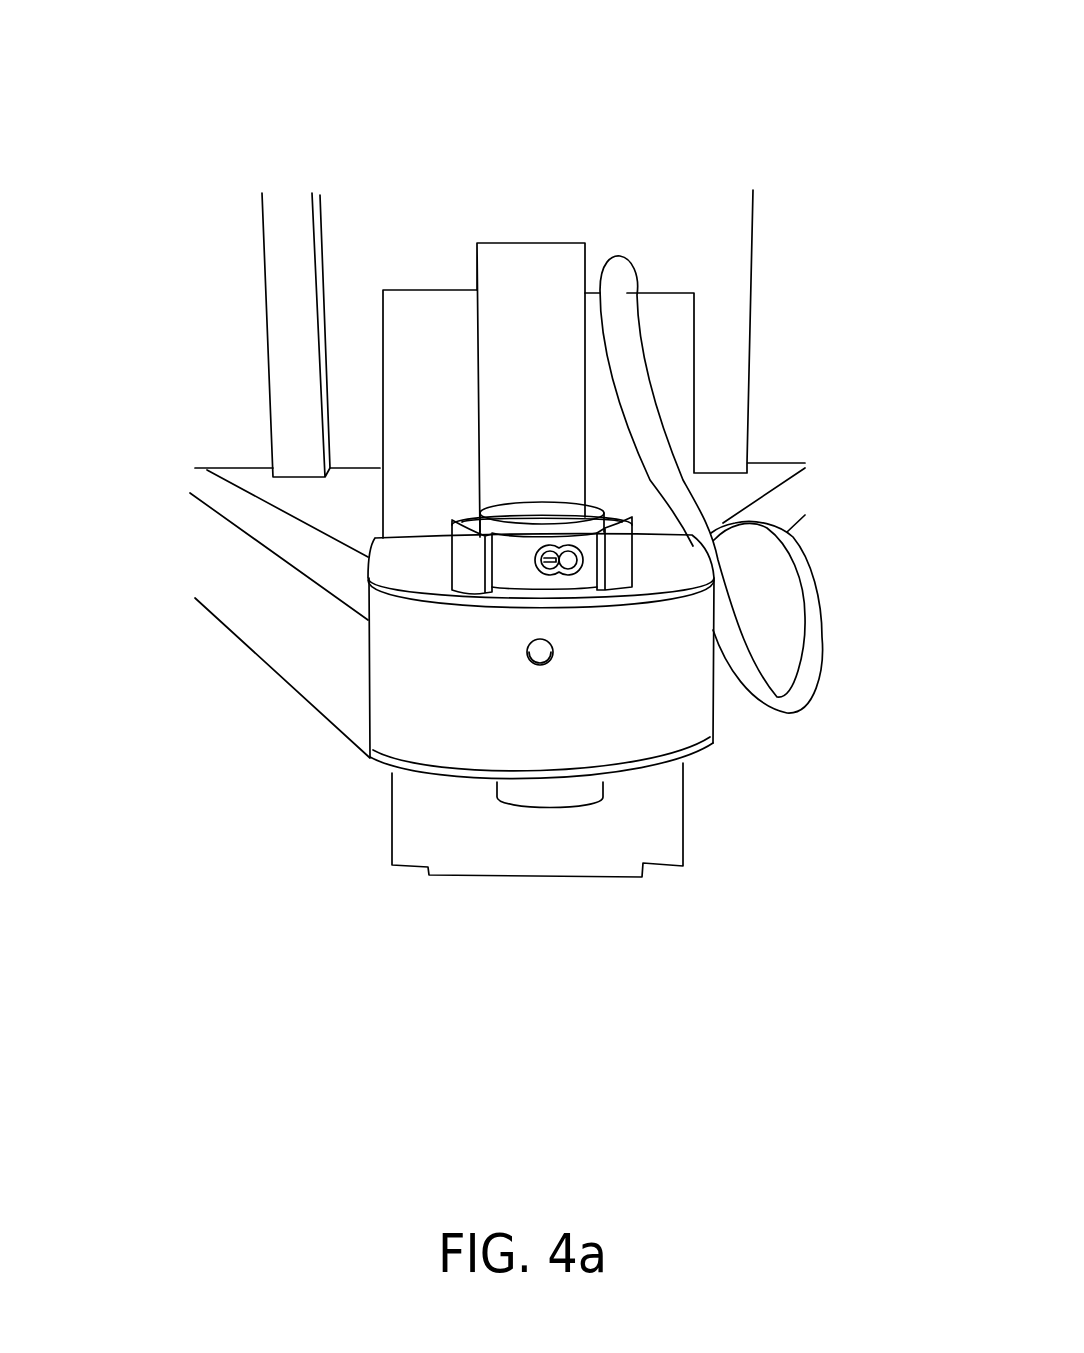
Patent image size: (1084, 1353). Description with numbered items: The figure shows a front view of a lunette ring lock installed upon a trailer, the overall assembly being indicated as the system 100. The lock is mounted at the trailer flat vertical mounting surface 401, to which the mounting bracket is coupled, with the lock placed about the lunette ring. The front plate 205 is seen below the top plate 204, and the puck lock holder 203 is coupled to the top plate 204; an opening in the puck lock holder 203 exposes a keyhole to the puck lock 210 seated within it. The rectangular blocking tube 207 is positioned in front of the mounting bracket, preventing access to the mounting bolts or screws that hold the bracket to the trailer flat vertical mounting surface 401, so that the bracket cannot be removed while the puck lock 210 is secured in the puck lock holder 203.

The system 100 is at (742, 68).
The rectangular blocking tube 207 is at (537, 295).
The trailer flat vertical mounting surface 401 is at (405, 358).
The puck lock 210 is at (542, 505).
The puck lock holder 203 is at (475, 558).
The top plate 204 is at (670, 572).
The front plate 205 is at (517, 725).